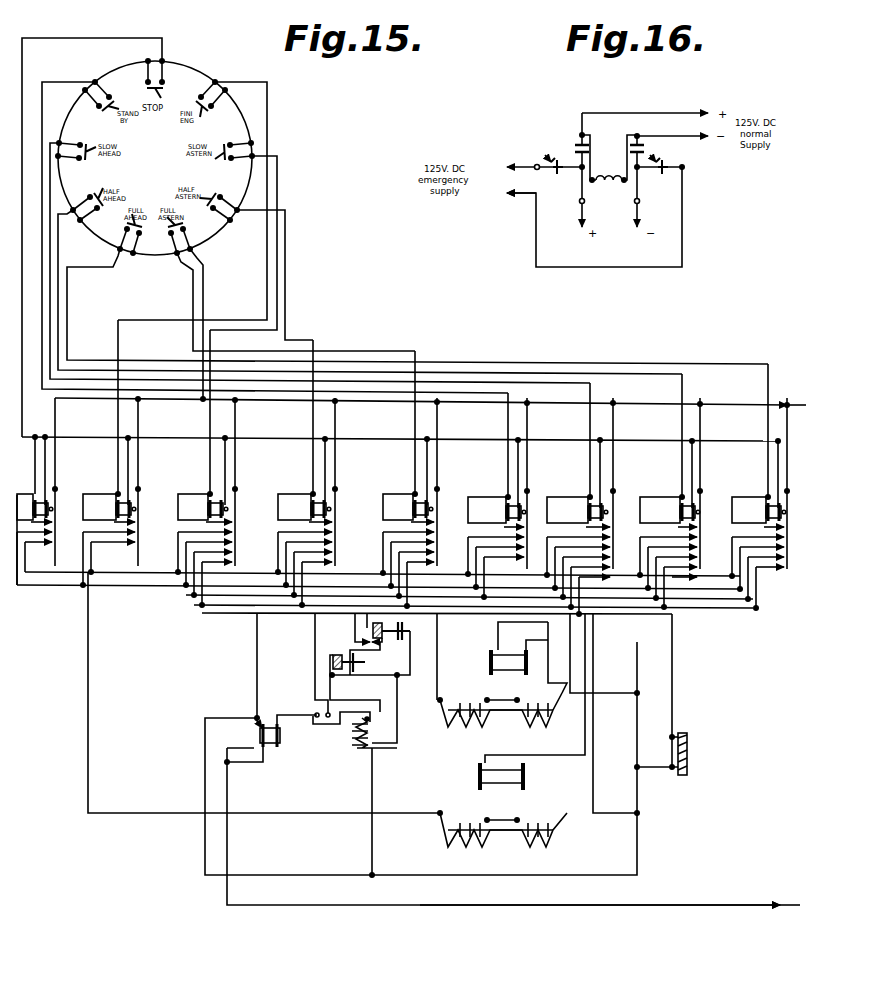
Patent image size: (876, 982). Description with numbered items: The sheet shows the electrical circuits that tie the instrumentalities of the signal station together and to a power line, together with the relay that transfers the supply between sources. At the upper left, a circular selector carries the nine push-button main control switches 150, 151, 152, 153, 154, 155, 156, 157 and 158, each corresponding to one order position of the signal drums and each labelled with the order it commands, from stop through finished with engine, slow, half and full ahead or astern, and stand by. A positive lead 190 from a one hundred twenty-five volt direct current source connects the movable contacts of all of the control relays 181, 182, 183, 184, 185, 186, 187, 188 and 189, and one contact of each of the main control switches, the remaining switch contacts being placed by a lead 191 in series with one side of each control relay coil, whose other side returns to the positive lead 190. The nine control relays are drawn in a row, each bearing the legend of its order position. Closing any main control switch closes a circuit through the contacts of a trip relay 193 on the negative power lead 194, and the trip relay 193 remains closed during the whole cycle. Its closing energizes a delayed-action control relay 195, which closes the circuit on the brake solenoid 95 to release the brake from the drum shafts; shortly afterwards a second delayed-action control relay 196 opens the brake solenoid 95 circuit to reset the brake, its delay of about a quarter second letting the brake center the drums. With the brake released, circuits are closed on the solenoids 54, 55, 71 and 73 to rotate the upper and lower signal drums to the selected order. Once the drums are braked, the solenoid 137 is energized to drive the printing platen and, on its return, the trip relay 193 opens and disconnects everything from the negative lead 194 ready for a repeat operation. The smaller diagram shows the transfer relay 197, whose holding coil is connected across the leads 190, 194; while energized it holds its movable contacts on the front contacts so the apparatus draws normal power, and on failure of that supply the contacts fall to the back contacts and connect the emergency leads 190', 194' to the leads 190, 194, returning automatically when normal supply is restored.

In FIG. 15, the main control switch 150 is at (165, 77).
In FIG. 15, the main control switch 151 is at (112, 104).
In FIG. 15, the main control switch 152 is at (198, 102).
In FIG. 15, the main control switch 153 is at (92, 135).
In FIG. 15, the main control switch 154 is at (226, 143).
In FIG. 15, the main control switch 155 is at (92, 193).
In FIG. 15, the main control switch 156 is at (217, 193).
In FIG. 15, the main control switch 157 is at (126, 224).
In FIG. 15, the main control switch 158 is at (188, 224).
In FIG. 15, the positive lead 190 is at (437, 336).
In FIG. 16, the positive lead 190 is at (626, 154).
In FIG. 15, the lead 191 is at (366, 437).
In FIG. 15, the control relay 181 is at (52, 490).
In FIG. 15, the control relay 182 is at (115, 496).
In FIG. 15, the control relay 183 is at (208, 496).
In FIG. 15, the control relay 184 is at (311, 496).
In FIG. 15, the control relay 185 is at (413, 496).
In FIG. 15, the control relay 186 is at (506, 498).
In FIG. 15, the control relay 187 is at (588, 498).
In FIG. 15, the control relay 188 is at (680, 498).
In FIG. 15, the control relay 189 is at (766, 498).
In FIG. 15, the trip relay 193 is at (263, 722).
In FIG. 15, the control relay 195 is at (399, 627).
In FIG. 15, the second control relay 196 is at (370, 687).
In FIG. 15, the solenoid 137 is at (370, 740).
In FIG. 15, the solenoid 54 is at (507, 654).
In FIG. 15, the solenoid 71 is at (468, 700).
In FIG. 15, the solenoid 55 is at (523, 777).
In FIG. 15, the solenoid 73 is at (466, 820).
In FIG. 15, the brake solenoid 95 is at (690, 740).
In FIG. 15, the negative lead 194 is at (618, 901).
In FIG. 16, the negative lead 194 is at (611, 200).
In FIG. 16, the lead 190' is at (544, 153).
In FIG. 16, the lead 194' is at (520, 209).
In FIG. 16, the transfer relay 197 is at (608, 185).